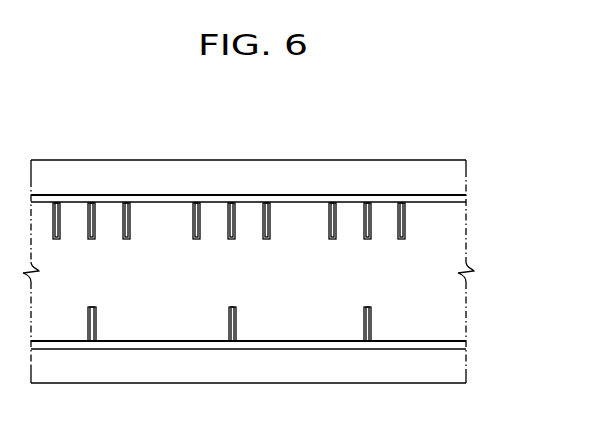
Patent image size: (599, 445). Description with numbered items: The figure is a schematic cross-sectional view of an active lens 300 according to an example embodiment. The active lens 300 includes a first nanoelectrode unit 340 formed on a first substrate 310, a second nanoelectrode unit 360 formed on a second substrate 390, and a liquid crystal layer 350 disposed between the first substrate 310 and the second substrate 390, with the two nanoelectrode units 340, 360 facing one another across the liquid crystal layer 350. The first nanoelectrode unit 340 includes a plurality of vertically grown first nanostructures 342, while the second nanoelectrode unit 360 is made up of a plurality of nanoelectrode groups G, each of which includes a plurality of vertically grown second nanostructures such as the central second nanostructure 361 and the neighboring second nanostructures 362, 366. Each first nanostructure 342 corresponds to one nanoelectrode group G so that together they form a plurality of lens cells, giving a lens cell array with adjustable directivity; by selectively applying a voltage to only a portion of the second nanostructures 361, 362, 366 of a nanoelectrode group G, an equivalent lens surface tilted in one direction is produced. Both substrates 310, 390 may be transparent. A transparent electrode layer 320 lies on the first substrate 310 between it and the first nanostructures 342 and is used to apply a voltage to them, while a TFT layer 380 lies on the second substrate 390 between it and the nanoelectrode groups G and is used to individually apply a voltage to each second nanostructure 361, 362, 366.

The active lens 300 is at (474, 132).
The first substrate 310 is at (466, 367).
The transparent electrode layer 320 is at (466, 347).
The first nanoelectrode unit 340 is at (305, 361).
The first nanostructure 342 is at (236, 323).
The liquid crystal layer 350 is at (466, 253).
The second nanoelectrode unit 360 is at (288, 165).
The central second nanostructure 361 is at (364, 215).
The second nanostructure 362 is at (329, 215).
The second nanostructure 366 is at (399, 215).
The nanoelectrode group G is at (410, 118).
The TFT layer 380 is at (466, 200).
The second substrate 390 is at (466, 174).